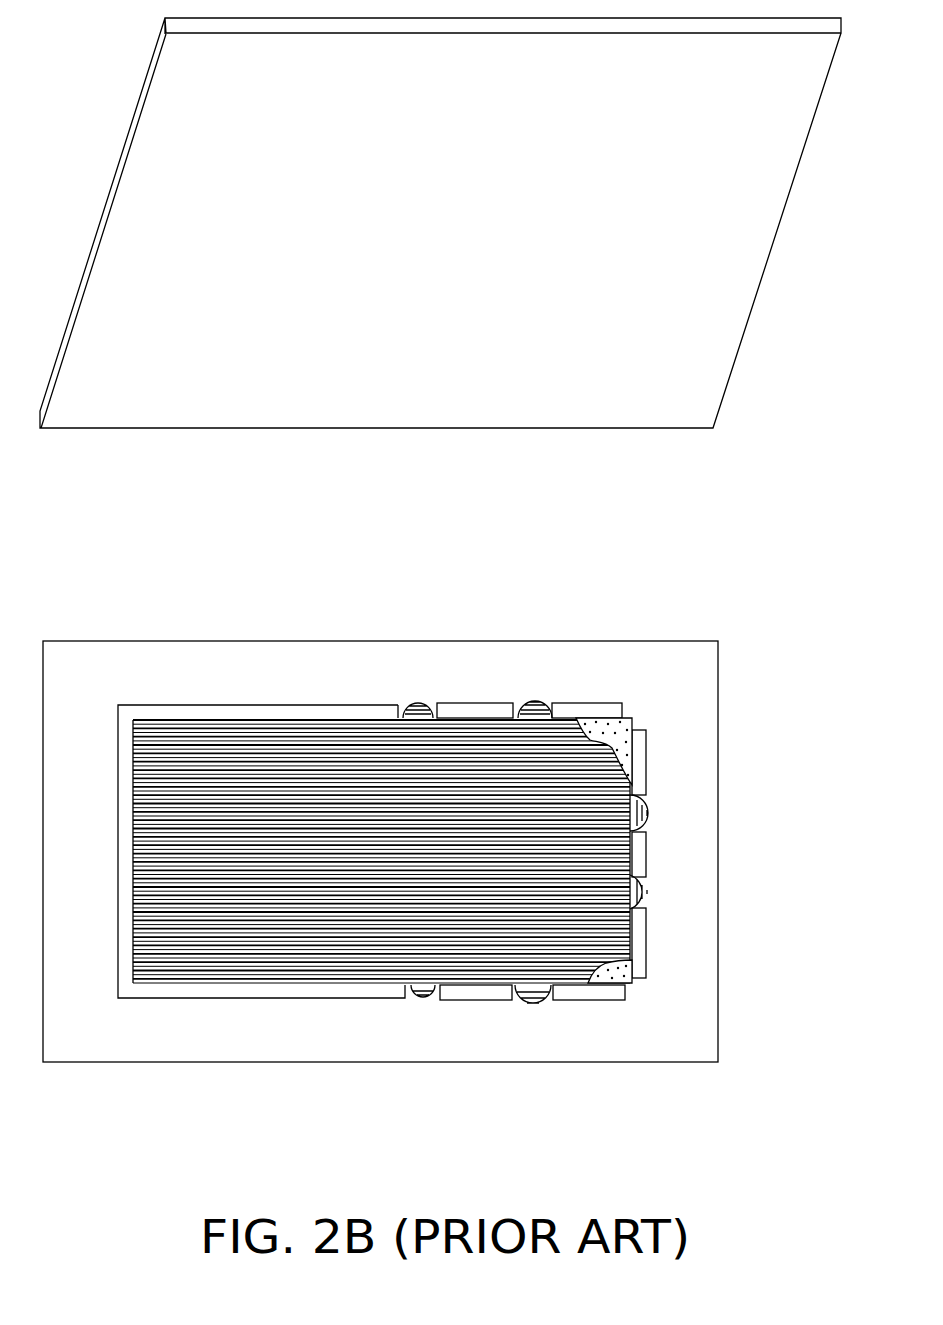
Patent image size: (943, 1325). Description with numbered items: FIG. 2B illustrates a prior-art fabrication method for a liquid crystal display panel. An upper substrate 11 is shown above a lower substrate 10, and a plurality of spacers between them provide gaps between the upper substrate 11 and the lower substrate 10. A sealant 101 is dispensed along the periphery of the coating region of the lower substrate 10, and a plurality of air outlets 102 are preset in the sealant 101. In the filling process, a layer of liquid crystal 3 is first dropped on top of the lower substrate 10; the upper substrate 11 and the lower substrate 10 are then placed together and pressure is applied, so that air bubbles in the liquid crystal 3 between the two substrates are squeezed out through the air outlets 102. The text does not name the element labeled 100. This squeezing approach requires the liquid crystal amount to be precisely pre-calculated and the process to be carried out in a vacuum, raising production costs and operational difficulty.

The upper substrate 11 is at (200, 418).
The lower substrate 10 is at (362, 658).
The liquid crystal 3 is at (186, 965).
The air outlets 102 is at (642, 715).
The sealant 101 is at (570, 1000).
The conductive adhesive 100 is at (615, 983).